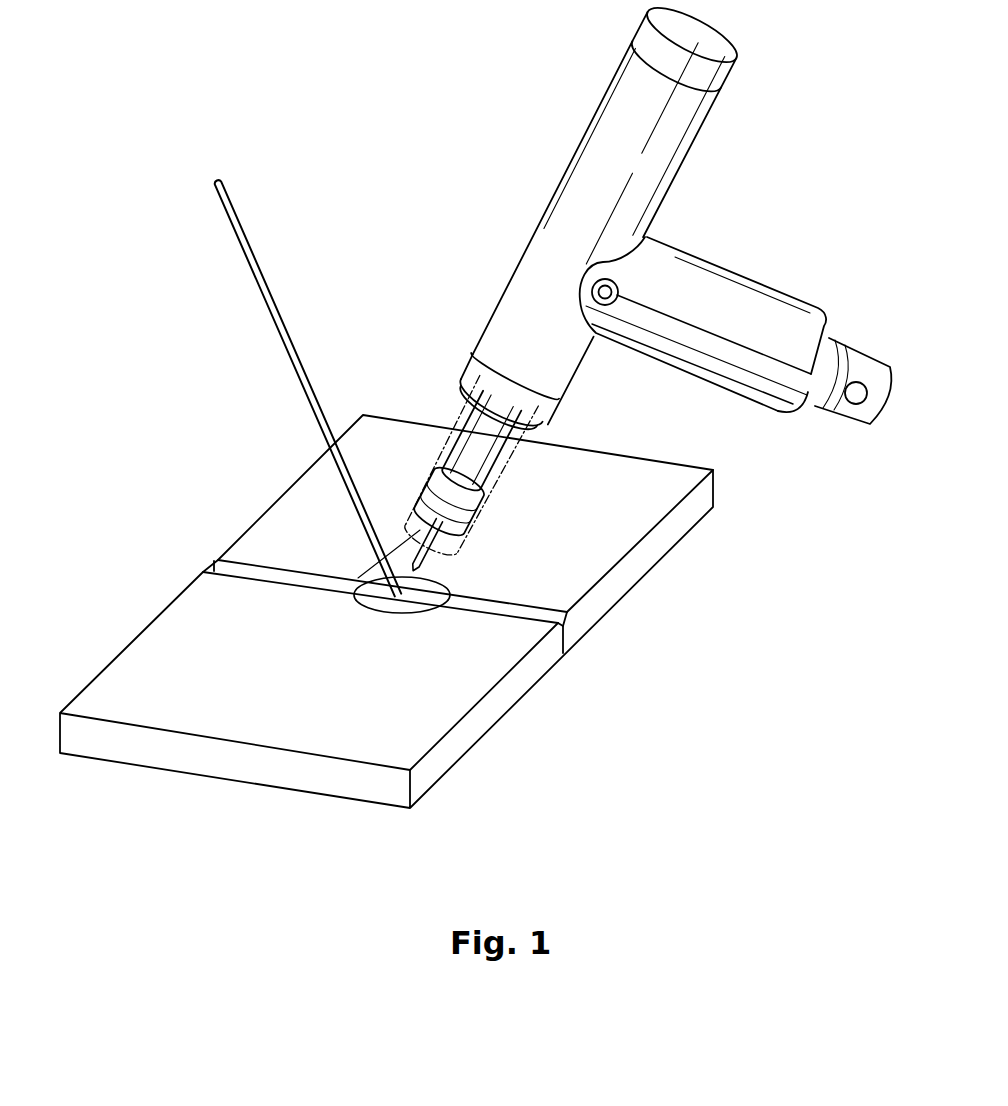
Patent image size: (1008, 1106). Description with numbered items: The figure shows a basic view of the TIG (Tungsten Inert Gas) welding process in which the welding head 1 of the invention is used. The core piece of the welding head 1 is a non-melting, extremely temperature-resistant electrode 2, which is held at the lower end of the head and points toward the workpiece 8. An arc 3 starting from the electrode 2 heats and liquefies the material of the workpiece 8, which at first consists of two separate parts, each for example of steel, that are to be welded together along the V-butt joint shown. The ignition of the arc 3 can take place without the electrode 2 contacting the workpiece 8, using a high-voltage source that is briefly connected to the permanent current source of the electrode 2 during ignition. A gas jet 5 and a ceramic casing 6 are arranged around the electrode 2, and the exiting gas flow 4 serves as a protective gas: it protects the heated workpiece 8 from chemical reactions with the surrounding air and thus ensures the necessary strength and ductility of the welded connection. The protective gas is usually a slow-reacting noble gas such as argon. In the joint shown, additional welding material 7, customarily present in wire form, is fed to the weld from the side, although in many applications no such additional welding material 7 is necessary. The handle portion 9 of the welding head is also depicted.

The welding head 1 is at (462, 242).
The electrode 2 is at (417, 572).
The arc 3 is at (410, 593).
The gas flow 4 is at (357, 605).
The gas jet 5 is at (478, 436).
The ceramic casing 6 is at (510, 458).
The additional welding material 7 is at (250, 255).
The workpiece 8 is at (183, 655).
The handle 9 is at (577, 207).